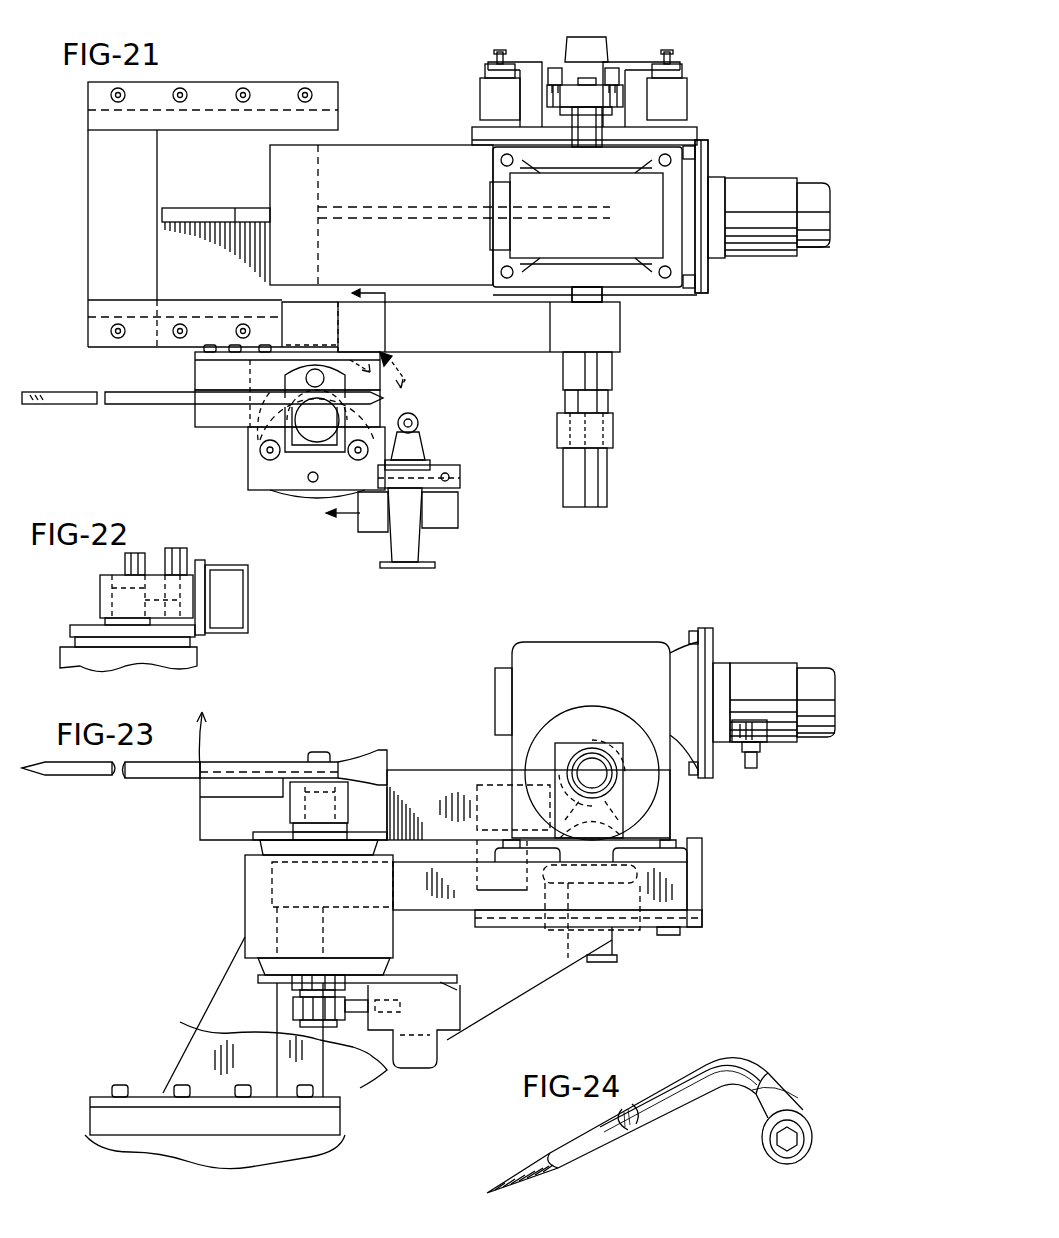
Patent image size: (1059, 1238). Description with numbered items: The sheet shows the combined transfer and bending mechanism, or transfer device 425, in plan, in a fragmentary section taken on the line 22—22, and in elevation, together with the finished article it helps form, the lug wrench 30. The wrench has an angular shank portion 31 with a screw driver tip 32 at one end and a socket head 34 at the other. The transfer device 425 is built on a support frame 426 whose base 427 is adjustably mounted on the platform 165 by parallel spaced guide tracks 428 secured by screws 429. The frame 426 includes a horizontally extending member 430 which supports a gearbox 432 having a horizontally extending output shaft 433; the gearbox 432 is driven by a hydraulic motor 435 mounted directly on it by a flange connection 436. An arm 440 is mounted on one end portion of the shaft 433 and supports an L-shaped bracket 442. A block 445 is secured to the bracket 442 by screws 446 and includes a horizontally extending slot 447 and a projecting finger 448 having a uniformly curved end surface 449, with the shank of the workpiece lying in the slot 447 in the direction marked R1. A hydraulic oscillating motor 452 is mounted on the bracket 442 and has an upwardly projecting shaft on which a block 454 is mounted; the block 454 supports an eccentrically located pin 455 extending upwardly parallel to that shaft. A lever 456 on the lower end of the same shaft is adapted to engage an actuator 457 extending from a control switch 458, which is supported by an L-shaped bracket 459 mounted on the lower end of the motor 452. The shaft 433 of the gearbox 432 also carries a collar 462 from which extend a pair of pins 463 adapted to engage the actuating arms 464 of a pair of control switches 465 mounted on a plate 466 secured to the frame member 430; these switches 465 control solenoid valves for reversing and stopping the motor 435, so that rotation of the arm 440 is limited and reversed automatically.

In FIG. 21, the section line 22— 22 is at (357, 402).
In FIG. 24, the lug wrench 30 is at (691, 1066).
In FIG. 24, the angular shank portion 31 is at (648, 1115).
In FIG. 24, the screw driver tip 32 is at (518, 1170).
In FIG. 24, the socket head 34 is at (792, 1108).
In FIG. 23, the platform 165 is at (136, 1150).
In FIG. 21, the transfer device 425 is at (690, 297).
In FIG. 23, the transfer device 425 is at (641, 643).
In FIG. 23, the support frame 426 is at (230, 962).
In FIG. 21, the base 427 is at (172, 160).
In FIG. 21, the guide tracks 428 is at (216, 86).
In FIG. 23, the guide tracks 428 is at (92, 1100).
In FIG. 21, the screws 429 is at (309, 87).
In FIG. 23, the screws 429 is at (175, 1084).
In FIG. 23, the horizontally extending member 430 is at (395, 888).
In FIG. 21, the gearbox 432 is at (642, 252).
In FIG. 23, the gearbox 432 is at (580, 652).
In FIG. 21, the output shaft 433 is at (602, 297).
In FIG. 21, the hydraulic motor 435 is at (770, 188).
In FIG. 23, the hydraulic motor 435 is at (765, 676).
In FIG. 23, the flange connection 436 is at (706, 628).
In FIG. 21, the arm 440 is at (522, 352).
In FIG. 22, the arm 440 is at (248, 598).
In FIG. 23, the arm 440 is at (432, 782).
In FIG. 21, the L-shaped bracket 442 is at (200, 354).
In FIG. 22, the L-shaped bracket 442 is at (200, 618).
In FIG. 21, the block 445 is at (200, 377).
In FIG. 23, the block 445 is at (250, 780).
In FIG. 21, the screws 446 is at (236, 344).
In FIG. 21, the slot 447 is at (215, 404).
In FIG. 21, the projecting finger 448 is at (312, 430).
In FIG. 21, the curved end surface 449 is at (356, 452).
In FIG. 22, the curved end surface 449 is at (128, 561).
In FIG. 21, the hydraulic oscillating motor 452 is at (248, 440).
In FIG. 22, the hydraulic oscillating motor 452 is at (197, 657).
In FIG. 23, the hydraulic oscillating motor 452 is at (250, 878).
In FIG. 22, the block 454 is at (100, 596).
In FIG. 21, the pin 455 is at (316, 372).
In FIG. 22, the pin 455 is at (174, 550).
In FIG. 23, the pin 455 is at (320, 750).
In FIG. 21, the lever 456 is at (390, 354).
In FIG. 23, the lever 456 is at (350, 988).
In FIG. 21, the actuator 457 is at (413, 420).
In FIG. 21, the control switch 458 is at (420, 546).
In FIG. 23, the control switch 458 is at (440, 1032).
In FIG. 21, the L-shaped bracket 459 is at (462, 478).
In FIG. 21, the collar 462 is at (588, 95).
In FIG. 21, the pins 463 is at (554, 84).
In FIG. 21, the actuating arms 464 is at (527, 60).
In FIG. 21, the control switches 465 is at (490, 94).
In FIG. 21, the plate 466 is at (478, 131).
In FIG. 21, the blade retraction direction R' R1 is at (118, 404).
In FIG. 22, the blade retraction direction R' R1 is at (152, 572).
In FIG. 23, the blade retraction direction R' R1 is at (128, 775).